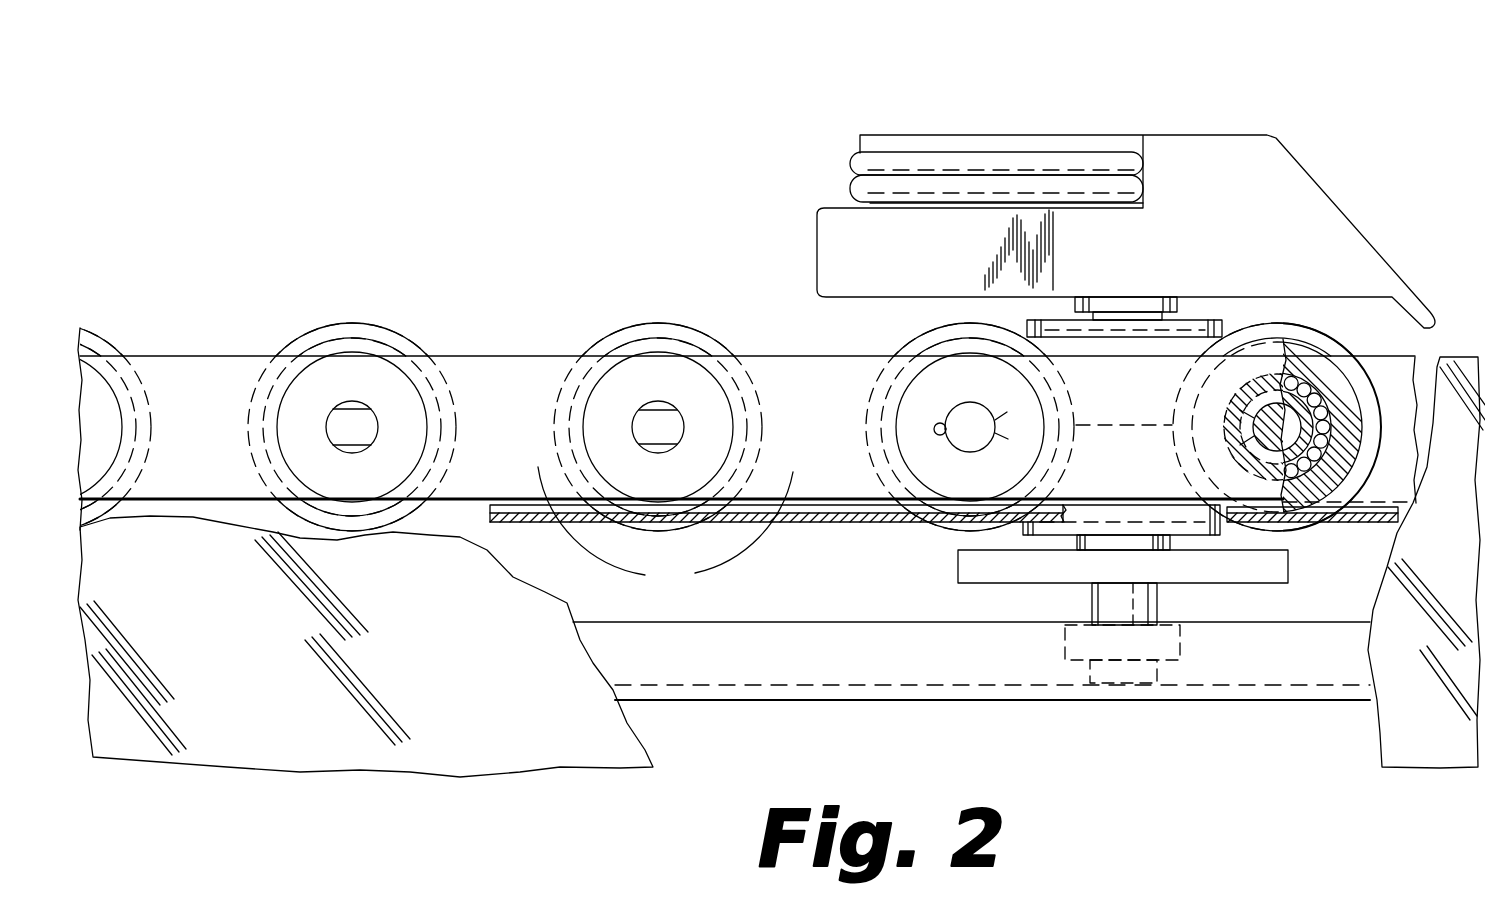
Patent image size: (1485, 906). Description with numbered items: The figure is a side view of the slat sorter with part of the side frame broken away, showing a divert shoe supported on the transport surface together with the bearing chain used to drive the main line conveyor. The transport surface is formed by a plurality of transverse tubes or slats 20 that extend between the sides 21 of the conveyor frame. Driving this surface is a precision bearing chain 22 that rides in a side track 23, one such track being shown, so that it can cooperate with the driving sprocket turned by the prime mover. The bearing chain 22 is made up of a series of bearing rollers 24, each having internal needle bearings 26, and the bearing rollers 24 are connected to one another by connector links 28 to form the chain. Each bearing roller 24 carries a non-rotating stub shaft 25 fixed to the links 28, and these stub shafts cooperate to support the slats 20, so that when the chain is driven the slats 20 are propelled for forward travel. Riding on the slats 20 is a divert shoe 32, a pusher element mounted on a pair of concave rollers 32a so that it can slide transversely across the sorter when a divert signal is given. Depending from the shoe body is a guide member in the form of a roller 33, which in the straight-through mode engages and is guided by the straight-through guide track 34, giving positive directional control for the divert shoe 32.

The transverse tubes or slats 20 is at (618, 335).
The sides of the conveyor frame 21 is at (365, 646).
The bearing chain 22 is at (754, 326).
The side track 23 is at (835, 516).
The bearing roller 24 is at (659, 340).
The stub shaft 25 is at (966, 414).
The needle bearings 26 is at (1302, 390).
The connector link 28 is at (665, 532).
The divert shoe 32 is at (1203, 203).
The concave rollers 32a is at (1122, 390).
The roller 33 is at (1130, 650).
The straight-through guide track 34 is at (752, 655).